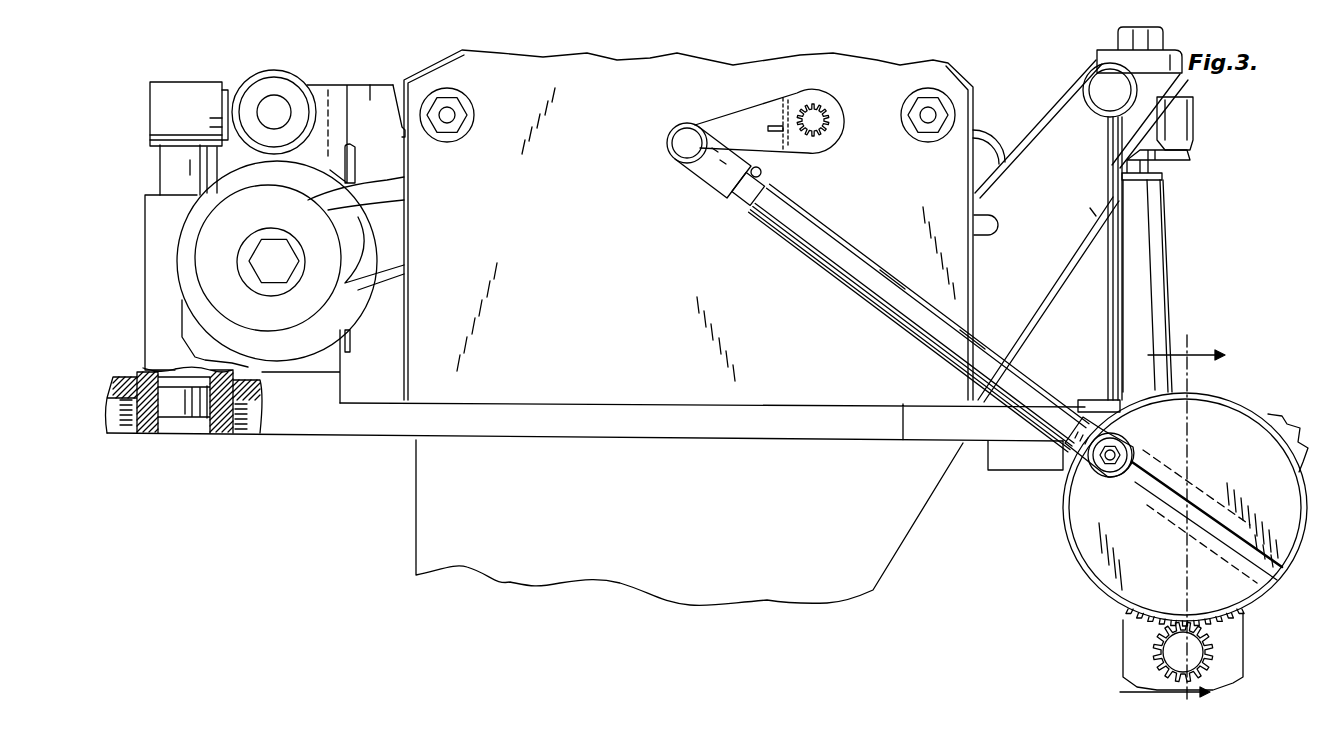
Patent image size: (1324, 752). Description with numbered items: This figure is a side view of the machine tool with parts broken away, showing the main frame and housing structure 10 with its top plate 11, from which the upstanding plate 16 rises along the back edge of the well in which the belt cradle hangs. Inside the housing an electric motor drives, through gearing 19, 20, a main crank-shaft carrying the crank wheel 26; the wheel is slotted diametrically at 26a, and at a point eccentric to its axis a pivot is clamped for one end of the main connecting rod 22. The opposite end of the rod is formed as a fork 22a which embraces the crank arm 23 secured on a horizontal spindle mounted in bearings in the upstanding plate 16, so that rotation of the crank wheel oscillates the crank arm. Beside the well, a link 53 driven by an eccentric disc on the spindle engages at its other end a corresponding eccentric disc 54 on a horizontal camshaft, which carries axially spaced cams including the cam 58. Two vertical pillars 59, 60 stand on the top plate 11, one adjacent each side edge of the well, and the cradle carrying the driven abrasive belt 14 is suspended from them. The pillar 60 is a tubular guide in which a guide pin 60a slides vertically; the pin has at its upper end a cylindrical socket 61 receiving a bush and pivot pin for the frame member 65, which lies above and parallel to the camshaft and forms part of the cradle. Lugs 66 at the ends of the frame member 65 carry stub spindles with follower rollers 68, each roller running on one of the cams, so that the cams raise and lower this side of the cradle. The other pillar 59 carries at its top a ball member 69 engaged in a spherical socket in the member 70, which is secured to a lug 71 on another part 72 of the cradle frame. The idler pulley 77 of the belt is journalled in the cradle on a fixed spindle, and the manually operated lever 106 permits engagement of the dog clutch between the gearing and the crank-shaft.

The main frame and housing structure 10 is at (1238, 642).
The top plate 11 is at (296, 424).
The abrasive belt 14 is at (1010, 148).
The upstanding plate 16 is at (450, 75).
The gear element 19 is at (1148, 652).
The gear element 20 is at (1127, 617).
The main connecting rod 22 is at (820, 262).
The fork 22a is at (702, 178).
The crank arm 23 is at (745, 112).
The crank wheel 26 is at (1063, 487).
The diametrical slot 26a is at (1147, 492).
The link 53 is at (396, 230).
The eccentric disc 54 is at (325, 293).
The cam 58 is at (314, 352).
The pillar 59 is at (1172, 236).
The pillar 60 is at (150, 210).
The guide pin 60a is at (173, 168).
The cylindrical socket 61 is at (165, 88).
The frame member 65 is at (336, 100).
The lug 66 is at (325, 92).
The follower roller 68 is at (275, 74).
The ball member 69 is at (1160, 155).
The socket member 70 is at (1190, 85).
The lug 71 is at (1098, 56).
The frame part 72 is at (1172, 98).
The idler pulley 77 is at (983, 150).
The manually-operated lever 106 is at (1095, 86).